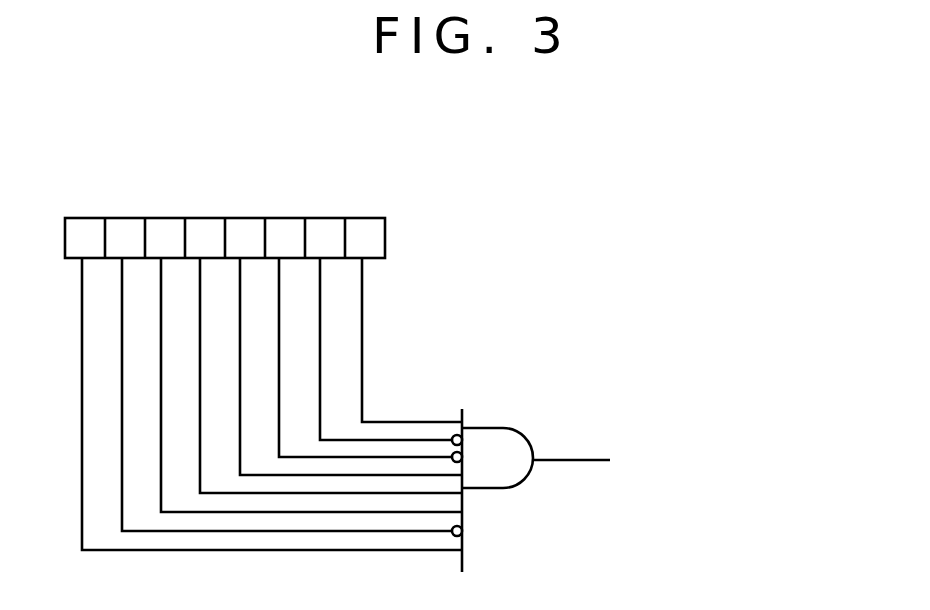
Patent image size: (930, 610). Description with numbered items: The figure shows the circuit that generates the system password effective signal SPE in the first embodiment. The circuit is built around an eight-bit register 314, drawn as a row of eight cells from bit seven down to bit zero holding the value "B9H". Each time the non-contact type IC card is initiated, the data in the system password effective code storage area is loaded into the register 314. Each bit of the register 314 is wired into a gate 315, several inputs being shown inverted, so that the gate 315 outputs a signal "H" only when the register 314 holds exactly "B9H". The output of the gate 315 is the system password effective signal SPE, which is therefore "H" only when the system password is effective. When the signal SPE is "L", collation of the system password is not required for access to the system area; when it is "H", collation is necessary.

The 8-bit register 314 is at (224, 198).
The gate 315 is at (503, 430).
The system password effective signal SPE is at (658, 471).